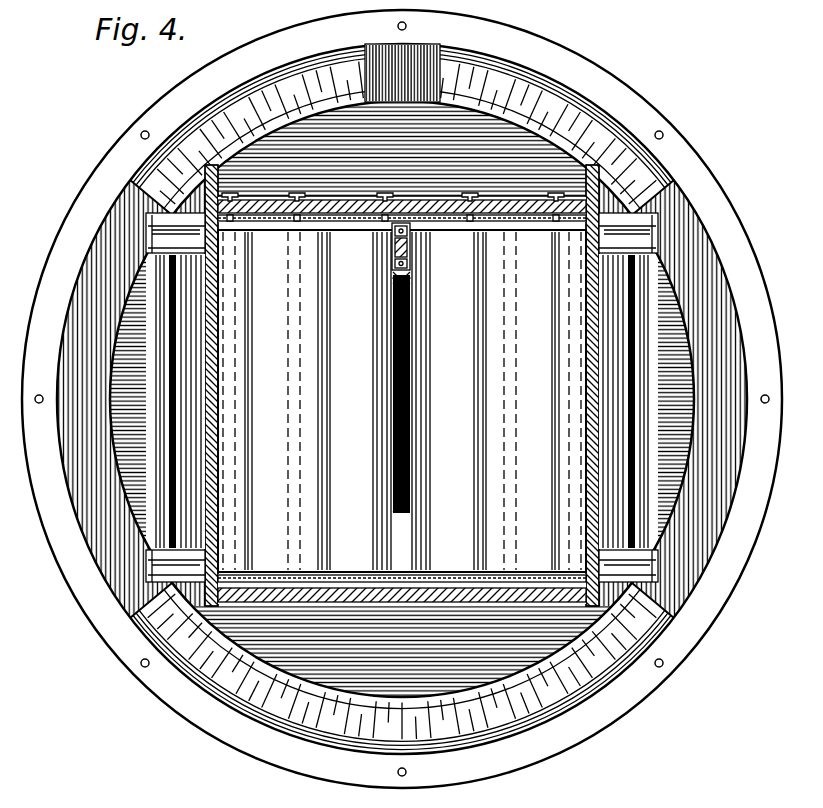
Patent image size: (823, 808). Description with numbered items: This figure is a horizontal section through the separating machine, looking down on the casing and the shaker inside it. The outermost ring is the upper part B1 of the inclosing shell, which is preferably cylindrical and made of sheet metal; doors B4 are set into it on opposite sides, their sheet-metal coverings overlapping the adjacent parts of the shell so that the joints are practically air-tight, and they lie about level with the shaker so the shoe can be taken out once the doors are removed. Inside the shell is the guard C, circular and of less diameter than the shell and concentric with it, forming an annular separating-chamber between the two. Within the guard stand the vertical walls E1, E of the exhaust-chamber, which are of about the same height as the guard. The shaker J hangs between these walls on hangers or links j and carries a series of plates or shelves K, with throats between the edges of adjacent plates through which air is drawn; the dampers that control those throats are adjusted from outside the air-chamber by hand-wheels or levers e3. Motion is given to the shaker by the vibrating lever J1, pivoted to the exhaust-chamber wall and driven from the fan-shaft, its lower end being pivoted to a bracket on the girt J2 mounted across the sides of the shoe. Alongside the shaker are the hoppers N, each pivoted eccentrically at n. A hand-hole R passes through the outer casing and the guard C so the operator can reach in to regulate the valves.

The upper part of shell B1 is at (438, 55).
The doors B4 is at (402, 398).
The guard C is at (402, 401).
The hand-hole R is at (402, 73).
The vertical wall of exhaust-chamber E1 is at (440, 204).
The vertical wall of exhaust-chamber E is at (424, 602).
The hand-wheels or levers e3 is at (232, 195).
The plates or shelves K is at (402, 401).
The hangers or links j is at (252, 236).
The shaker J is at (453, 570).
The vibrating lever J1 is at (410, 248).
The girt J2 is at (400, 528).
The hoppers N is at (165, 373).
The pivots of hoppers n is at (150, 258).